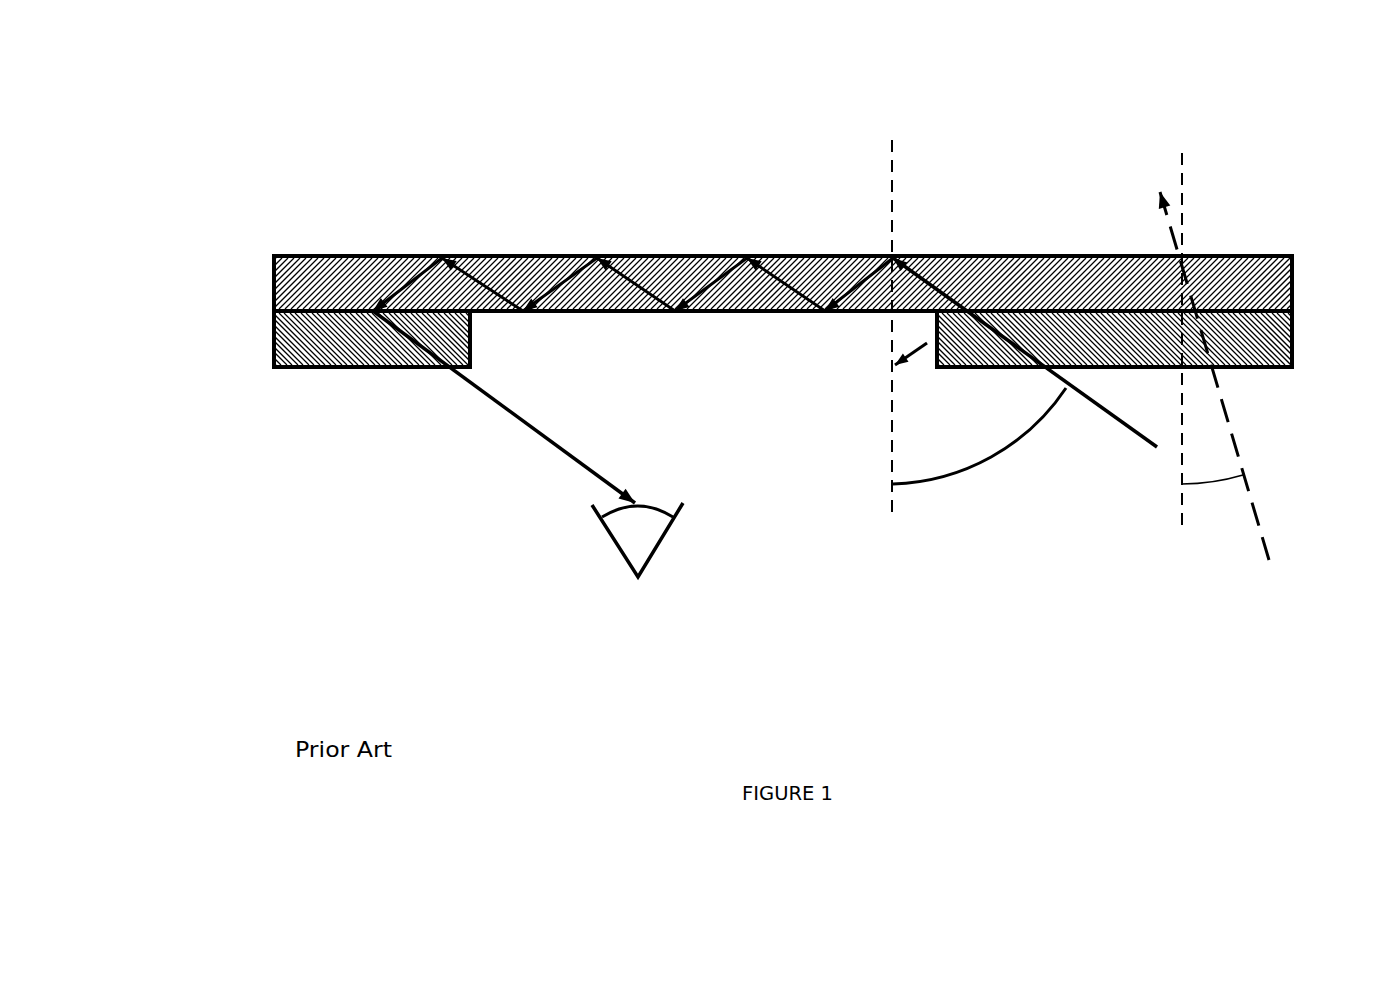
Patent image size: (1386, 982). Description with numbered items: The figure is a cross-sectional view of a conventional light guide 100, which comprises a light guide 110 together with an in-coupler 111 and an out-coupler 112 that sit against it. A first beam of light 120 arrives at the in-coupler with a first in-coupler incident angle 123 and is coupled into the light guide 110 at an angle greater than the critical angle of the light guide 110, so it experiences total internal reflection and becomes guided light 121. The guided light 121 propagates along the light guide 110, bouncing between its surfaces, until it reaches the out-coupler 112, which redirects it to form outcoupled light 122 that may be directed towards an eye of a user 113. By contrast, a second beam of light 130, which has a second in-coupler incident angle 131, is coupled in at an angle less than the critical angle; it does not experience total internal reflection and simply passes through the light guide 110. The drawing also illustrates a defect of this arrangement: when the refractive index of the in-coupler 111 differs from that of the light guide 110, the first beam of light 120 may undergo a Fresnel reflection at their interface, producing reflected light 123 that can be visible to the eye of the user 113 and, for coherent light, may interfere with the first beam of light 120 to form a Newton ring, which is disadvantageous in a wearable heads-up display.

The conventional light guide 100 is at (343, 537).
The light guide 110 is at (333, 305).
The in-coupler 111 is at (1248, 337).
The out-coupler 112 is at (287, 342).
The eye of a user 113 is at (638, 580).
The first beam of light 120 is at (1127, 428).
The guided light 121 is at (408, 256).
The outcoupled light 122 is at (470, 383).
The first in-coupler incident angle / reflected light 123 is at (893, 352).
The second beam of light 130 is at (1267, 537).
The second in-coupler incident angle 131 is at (1214, 482).